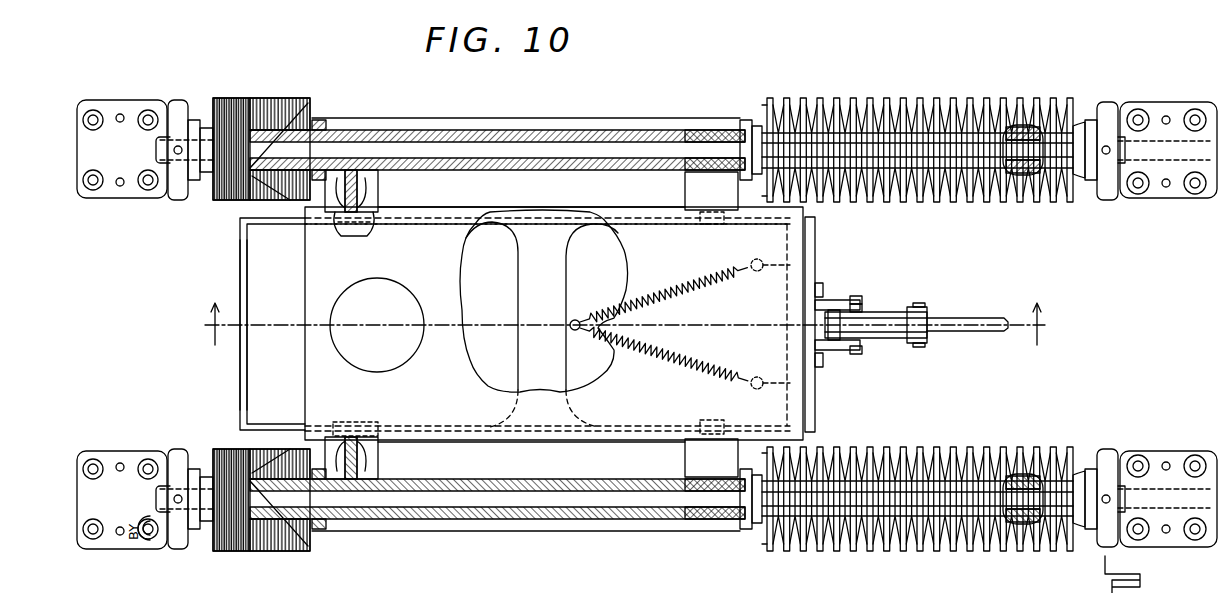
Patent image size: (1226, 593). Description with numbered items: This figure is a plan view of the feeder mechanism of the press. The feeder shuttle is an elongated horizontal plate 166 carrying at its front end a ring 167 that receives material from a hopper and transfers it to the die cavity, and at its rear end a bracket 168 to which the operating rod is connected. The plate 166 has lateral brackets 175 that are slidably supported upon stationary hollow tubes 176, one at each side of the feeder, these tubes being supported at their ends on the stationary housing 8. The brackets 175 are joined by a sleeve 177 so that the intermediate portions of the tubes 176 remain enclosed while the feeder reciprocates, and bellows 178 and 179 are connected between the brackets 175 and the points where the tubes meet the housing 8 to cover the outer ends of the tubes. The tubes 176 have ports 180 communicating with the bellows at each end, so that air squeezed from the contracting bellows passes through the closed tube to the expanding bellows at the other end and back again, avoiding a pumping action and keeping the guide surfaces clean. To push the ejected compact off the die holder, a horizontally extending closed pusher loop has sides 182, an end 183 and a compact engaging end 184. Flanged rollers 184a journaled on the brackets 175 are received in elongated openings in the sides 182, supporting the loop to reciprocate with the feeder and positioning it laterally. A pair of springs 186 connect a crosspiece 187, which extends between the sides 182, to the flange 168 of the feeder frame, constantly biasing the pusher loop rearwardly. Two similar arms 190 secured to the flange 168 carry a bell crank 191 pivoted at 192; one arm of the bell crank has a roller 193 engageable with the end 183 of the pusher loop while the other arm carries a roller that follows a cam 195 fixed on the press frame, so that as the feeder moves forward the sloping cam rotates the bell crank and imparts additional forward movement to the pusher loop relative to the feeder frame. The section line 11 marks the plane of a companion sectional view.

The stationary housing 8 is at (178, 100).
The section line 11- 11 is at (623, 324).
The elongated horizontal plate 166 is at (305, 293).
The ring 167 is at (334, 309).
The bracket 168 is at (789, 235).
The lateral brackets 175 is at (378, 190).
The stationary hollow tubes 176 is at (452, 130).
The sleeve 177 is at (630, 128).
The bellows 178 is at (288, 98).
The bellows 179 is at (900, 98).
The ports 180 is at (308, 110).
The sides 182 is at (277, 224).
The end 183 is at (815, 250).
The compact engaging end 184 is at (240, 257).
The rollers 184a is at (356, 230).
The springs 186 is at (640, 340).
The crosspiece 187 is at (517, 283).
The arms 190 is at (862, 300).
The bell crank 191 is at (923, 308).
The pivot 192 is at (855, 296).
The roller 193 is at (835, 330).
The cam 195 is at (990, 318).